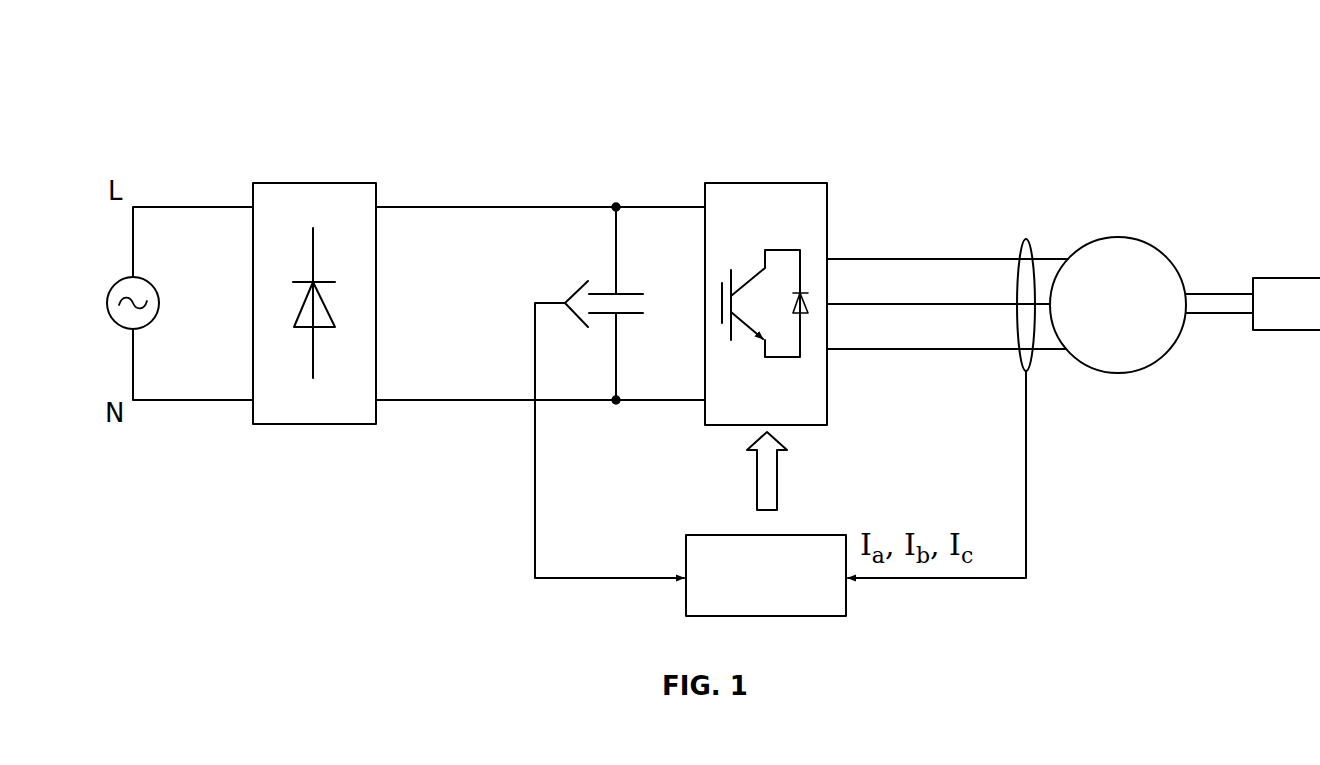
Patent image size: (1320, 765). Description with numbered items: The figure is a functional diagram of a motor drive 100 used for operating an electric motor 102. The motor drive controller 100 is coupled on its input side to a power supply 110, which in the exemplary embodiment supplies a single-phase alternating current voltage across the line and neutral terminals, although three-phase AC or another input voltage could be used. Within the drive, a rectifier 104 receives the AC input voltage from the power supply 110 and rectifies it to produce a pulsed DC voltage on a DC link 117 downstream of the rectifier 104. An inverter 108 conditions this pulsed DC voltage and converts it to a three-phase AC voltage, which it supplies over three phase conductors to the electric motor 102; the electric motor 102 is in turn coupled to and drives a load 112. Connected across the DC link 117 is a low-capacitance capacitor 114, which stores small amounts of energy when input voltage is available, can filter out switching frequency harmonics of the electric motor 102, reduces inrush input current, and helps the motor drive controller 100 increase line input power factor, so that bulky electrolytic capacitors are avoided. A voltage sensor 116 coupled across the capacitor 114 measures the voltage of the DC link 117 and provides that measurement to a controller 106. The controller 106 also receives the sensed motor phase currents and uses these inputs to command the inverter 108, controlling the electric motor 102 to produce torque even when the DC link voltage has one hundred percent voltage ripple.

The motor drive 100 is at (150, 71).
The electric motor 102 is at (1118, 237).
The rectifier 104 is at (318, 183).
The controller 106 is at (752, 535).
The inverter 108 is at (770, 183).
The power supply 110 is at (117, 281).
The load 112 is at (1313, 316).
The low-capacitance capacitor 114 is at (606, 293).
The voltage sensor 116 is at (610, 578).
The DC link 117 is at (528, 193).